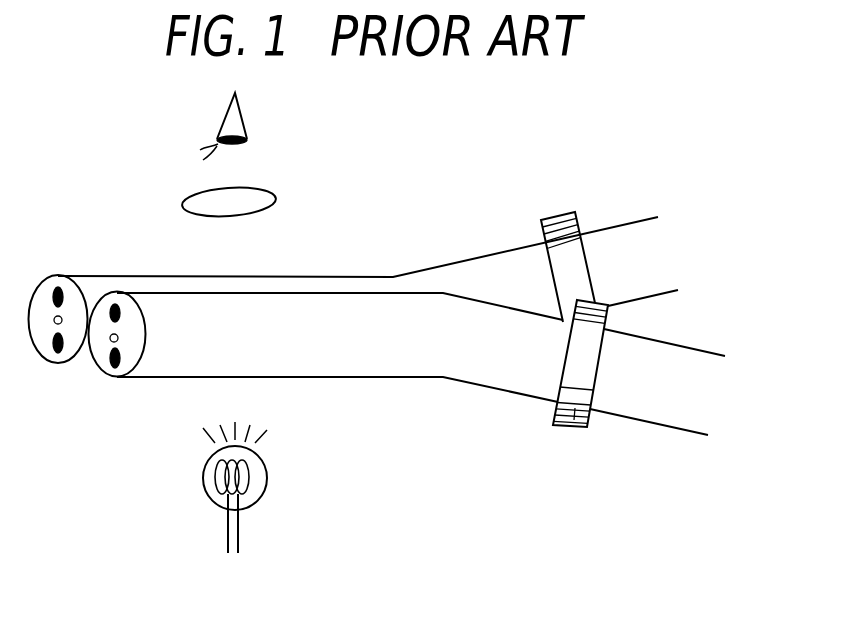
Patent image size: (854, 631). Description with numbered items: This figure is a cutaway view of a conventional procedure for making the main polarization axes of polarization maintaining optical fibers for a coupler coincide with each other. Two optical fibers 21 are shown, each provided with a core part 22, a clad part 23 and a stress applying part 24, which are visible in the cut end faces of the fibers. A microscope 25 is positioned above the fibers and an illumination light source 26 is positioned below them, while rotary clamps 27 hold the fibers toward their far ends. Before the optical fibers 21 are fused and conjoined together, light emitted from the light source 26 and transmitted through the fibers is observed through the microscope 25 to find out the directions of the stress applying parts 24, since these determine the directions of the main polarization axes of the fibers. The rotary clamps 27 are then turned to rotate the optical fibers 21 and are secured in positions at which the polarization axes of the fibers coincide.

The optical fibers 21 is at (365, 360).
The core part 22 is at (112, 341).
The clad part 23 is at (133, 345).
The stress applying part 24 is at (103, 350).
The microscope 25 is at (197, 203).
The illumination light source 26 is at (260, 475).
The rotary clamps 27 is at (578, 428).